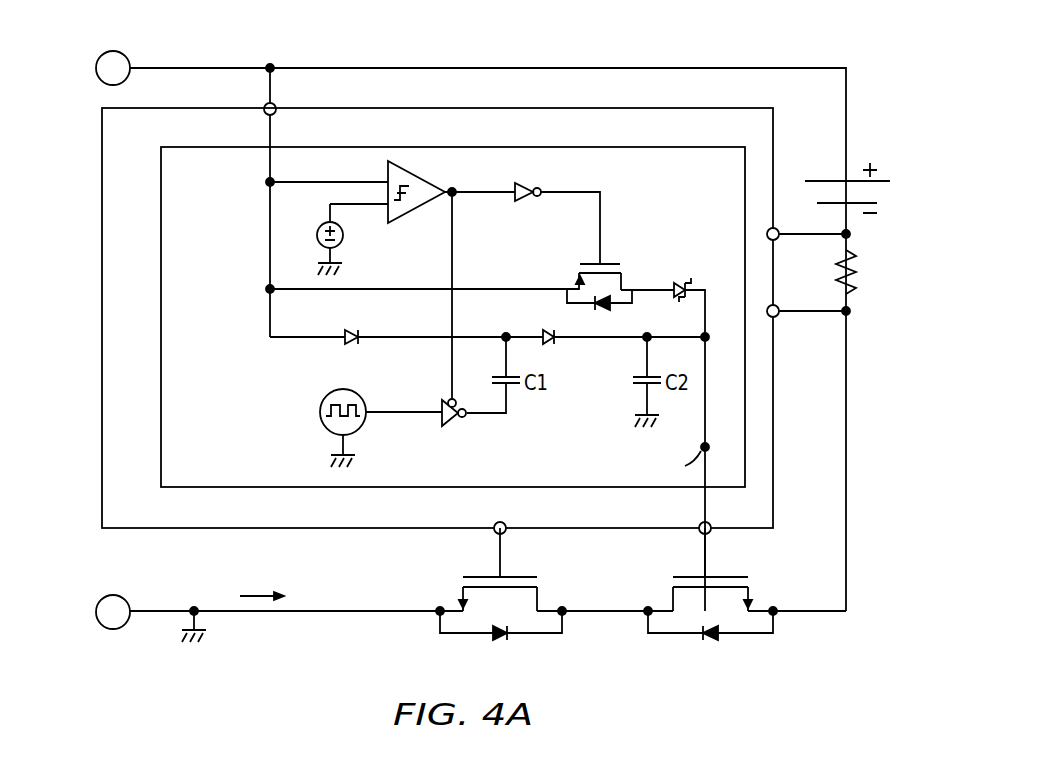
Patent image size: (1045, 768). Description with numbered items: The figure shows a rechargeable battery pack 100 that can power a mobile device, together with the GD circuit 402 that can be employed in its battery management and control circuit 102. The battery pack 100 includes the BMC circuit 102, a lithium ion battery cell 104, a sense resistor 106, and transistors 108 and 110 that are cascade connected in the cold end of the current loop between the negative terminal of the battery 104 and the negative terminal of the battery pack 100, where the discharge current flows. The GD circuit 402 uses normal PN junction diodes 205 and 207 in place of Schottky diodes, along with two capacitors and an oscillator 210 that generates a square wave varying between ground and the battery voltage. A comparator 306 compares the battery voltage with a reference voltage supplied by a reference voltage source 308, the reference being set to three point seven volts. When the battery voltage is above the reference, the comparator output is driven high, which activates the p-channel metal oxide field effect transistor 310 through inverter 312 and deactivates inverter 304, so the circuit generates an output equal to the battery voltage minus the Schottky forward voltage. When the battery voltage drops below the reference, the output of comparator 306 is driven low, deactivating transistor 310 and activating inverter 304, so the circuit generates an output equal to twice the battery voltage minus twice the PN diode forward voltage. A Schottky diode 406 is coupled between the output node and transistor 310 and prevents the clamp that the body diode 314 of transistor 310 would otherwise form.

The rechargeable battery pack 100 is at (860, 30).
The battery management and control (BMC) circuit 102 is at (758, 134).
The lithium ion battery cell 104 is at (814, 180).
The sense resistor 106 is at (836, 270).
The transistor 108 is at (513, 575).
The transistor 110 is at (723, 575).
The PN junction diode 205 is at (344, 343).
The PN junction diode 207 is at (541, 333).
The oscillator 210 is at (320, 413).
The inverter 304 is at (454, 425).
The comparator 306 is at (417, 178).
The reference voltage source 308 is at (344, 240).
The p-channel metal oxide field effect transistor 310 is at (605, 262).
The inverter 312 is at (532, 186).
The body diode 314 is at (611, 306).
The GD circuit 402 is at (724, 177).
The Schottky diode 406 is at (677, 283).